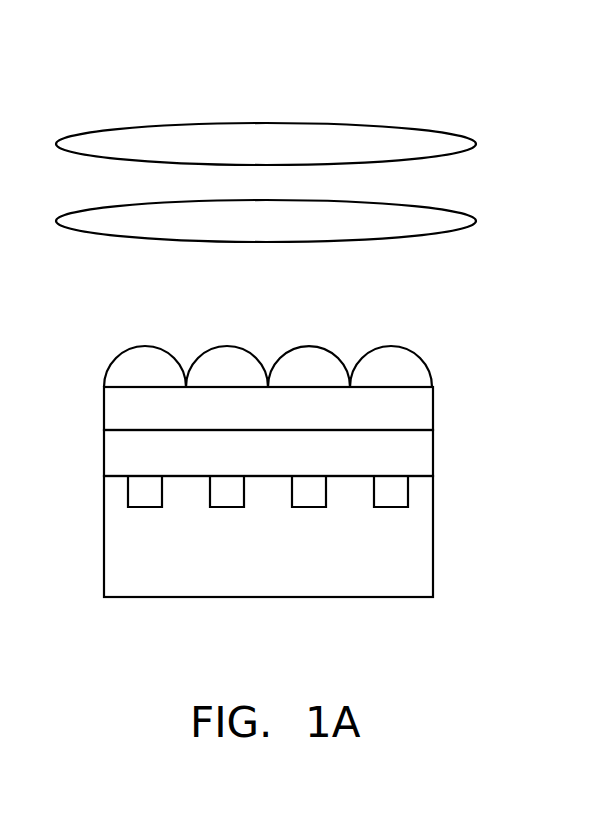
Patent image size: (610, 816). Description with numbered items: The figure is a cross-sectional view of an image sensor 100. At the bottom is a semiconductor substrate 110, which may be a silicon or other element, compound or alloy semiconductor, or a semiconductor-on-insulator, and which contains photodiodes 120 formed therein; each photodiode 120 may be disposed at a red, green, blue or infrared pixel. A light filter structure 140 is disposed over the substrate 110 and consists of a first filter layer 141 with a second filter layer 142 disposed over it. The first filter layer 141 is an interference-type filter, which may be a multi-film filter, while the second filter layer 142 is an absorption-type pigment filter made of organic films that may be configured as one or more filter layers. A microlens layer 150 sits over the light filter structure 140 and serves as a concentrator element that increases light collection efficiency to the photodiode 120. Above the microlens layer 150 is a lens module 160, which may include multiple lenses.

The image sensor 100 is at (86, 91).
The semiconductor substrate 110 is at (412, 550).
The photodiode 120 is at (390, 493).
The light filter structure 140 is at (348, 431).
The first filter layer 141 is at (412, 453).
The second filter layer 142 is at (412, 408).
The microlens layer 150 is at (402, 362).
The lens module 160 is at (477, 180).